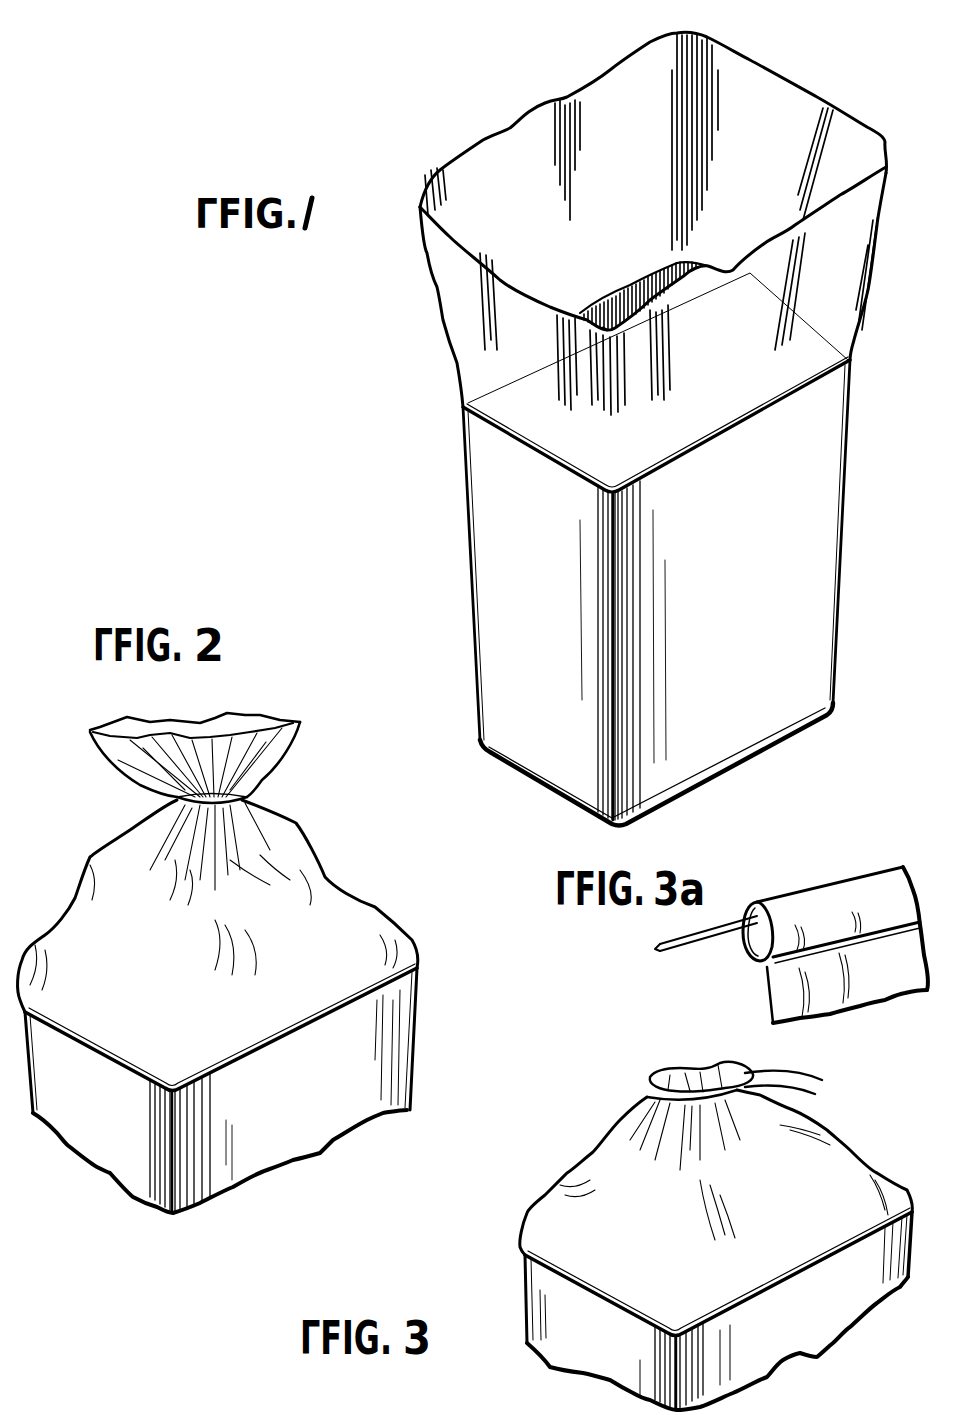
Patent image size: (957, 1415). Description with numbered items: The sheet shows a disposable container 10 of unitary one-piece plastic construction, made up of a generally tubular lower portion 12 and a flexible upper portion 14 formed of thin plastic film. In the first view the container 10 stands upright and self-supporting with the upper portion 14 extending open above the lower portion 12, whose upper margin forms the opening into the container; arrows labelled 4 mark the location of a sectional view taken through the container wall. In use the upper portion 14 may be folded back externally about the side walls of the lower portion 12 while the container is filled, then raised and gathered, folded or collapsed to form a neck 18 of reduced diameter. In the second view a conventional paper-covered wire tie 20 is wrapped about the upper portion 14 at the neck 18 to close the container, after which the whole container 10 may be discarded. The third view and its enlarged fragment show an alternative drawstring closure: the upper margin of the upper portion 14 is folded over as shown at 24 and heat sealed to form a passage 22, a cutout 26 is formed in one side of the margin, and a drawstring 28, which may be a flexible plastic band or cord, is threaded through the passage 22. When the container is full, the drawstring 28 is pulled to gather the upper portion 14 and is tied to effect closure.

In FIG. 1, the container 10 is at (393, 482).
In FIG. 1, the lower portion 12 is at (835, 560).
In FIG. 2, the lower portion 12 is at (412, 1028).
In FIG. 3, the lower portion 12 is at (522, 1280).
In FIG. 1, the upper portion 14 is at (443, 327).
In FIG. 2, the upper portion 14 is at (302, 867).
In FIG. 3, the upper portion 14 is at (593, 1152).
In FIG. 2, the neck 18 is at (257, 798).
In FIG. 3, the neck 18 is at (650, 1098).
In FIG. 2, the wire tie 20 is at (170, 788).
In FIG. 3A, the passage 22 is at (747, 957).
In FIG. 3A, the folded-over margin 24 is at (837, 903).
In FIG. 3, the cutout 26 is at (717, 1066).
In FIG. 3A, the drawstring 28 is at (702, 953).
In FIG. 3, the drawstring 28 is at (805, 1093).
In FIG. 1, the section line 4- 4 is at (703, 420).